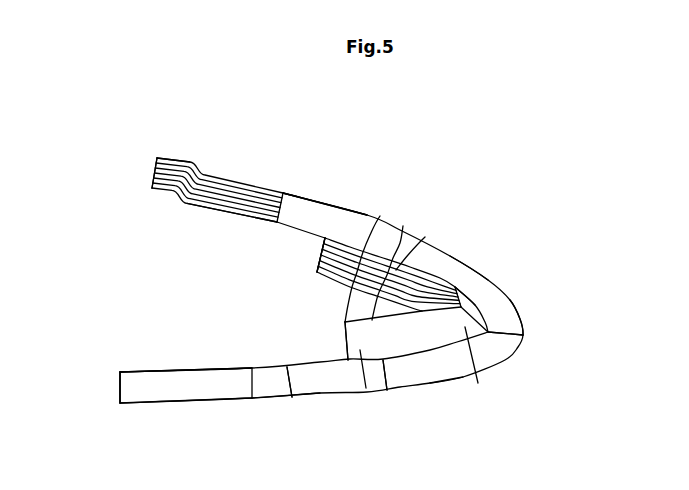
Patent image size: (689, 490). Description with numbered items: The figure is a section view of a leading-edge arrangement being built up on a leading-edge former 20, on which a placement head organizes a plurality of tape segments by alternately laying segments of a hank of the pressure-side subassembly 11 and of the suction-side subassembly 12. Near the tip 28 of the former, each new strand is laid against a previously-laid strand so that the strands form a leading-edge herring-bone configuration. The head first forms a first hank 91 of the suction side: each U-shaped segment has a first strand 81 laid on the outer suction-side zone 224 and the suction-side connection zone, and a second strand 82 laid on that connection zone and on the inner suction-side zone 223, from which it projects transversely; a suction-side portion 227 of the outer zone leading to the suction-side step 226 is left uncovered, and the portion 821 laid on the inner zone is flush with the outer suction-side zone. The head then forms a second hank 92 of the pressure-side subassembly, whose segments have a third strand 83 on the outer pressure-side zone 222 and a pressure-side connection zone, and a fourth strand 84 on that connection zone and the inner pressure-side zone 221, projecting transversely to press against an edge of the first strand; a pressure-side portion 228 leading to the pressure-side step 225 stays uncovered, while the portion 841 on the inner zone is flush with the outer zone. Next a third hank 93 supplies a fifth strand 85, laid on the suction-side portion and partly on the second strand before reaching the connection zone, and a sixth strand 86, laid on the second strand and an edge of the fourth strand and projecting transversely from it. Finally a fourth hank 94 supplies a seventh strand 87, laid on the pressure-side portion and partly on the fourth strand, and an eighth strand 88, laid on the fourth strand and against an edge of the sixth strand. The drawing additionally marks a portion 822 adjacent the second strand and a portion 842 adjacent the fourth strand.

The leading-edge former 20 is at (170, 273).
The pressure-side subassembly 11 is at (287, 187).
The second end section 12 is at (258, 417).
The tip of the leading-edge former 28 is at (471, 265).
The first strand 81 is at (198, 178).
The second strand 82 is at (380, 216).
The portion of the first hank 821 is at (325, 238).
The second edge of segment 82 822 is at (492, 277).
The third strand 83 is at (198, 398).
The fourth strand 84 is at (426, 345).
The portion of the second hank 841 is at (366, 388).
The second part of segment 84 842 is at (478, 383).
The fifth strand 85 is at (309, 193).
The sixth strand 86 is at (526, 312).
The seventh strand 87 is at (333, 391).
The eighth strand 88 is at (465, 372).
The first hank 91 is at (157, 157).
The second hank 92 is at (120, 405).
The third hank 93 is at (362, 211).
The fourth hank 94 is at (462, 380).
The inner pressure-side zone 221 is at (425, 237).
The outer pressure-side zone 222 is at (183, 368).
The inner suction-side zone 223 is at (352, 287).
The outer suction-side zone 224 is at (212, 211).
The pressure-side step 225 is at (345, 342).
The suction-side step 226 is at (320, 257).
The suction-side portion 227 is at (283, 224).
The pressure-side portion 228 is at (292, 397).